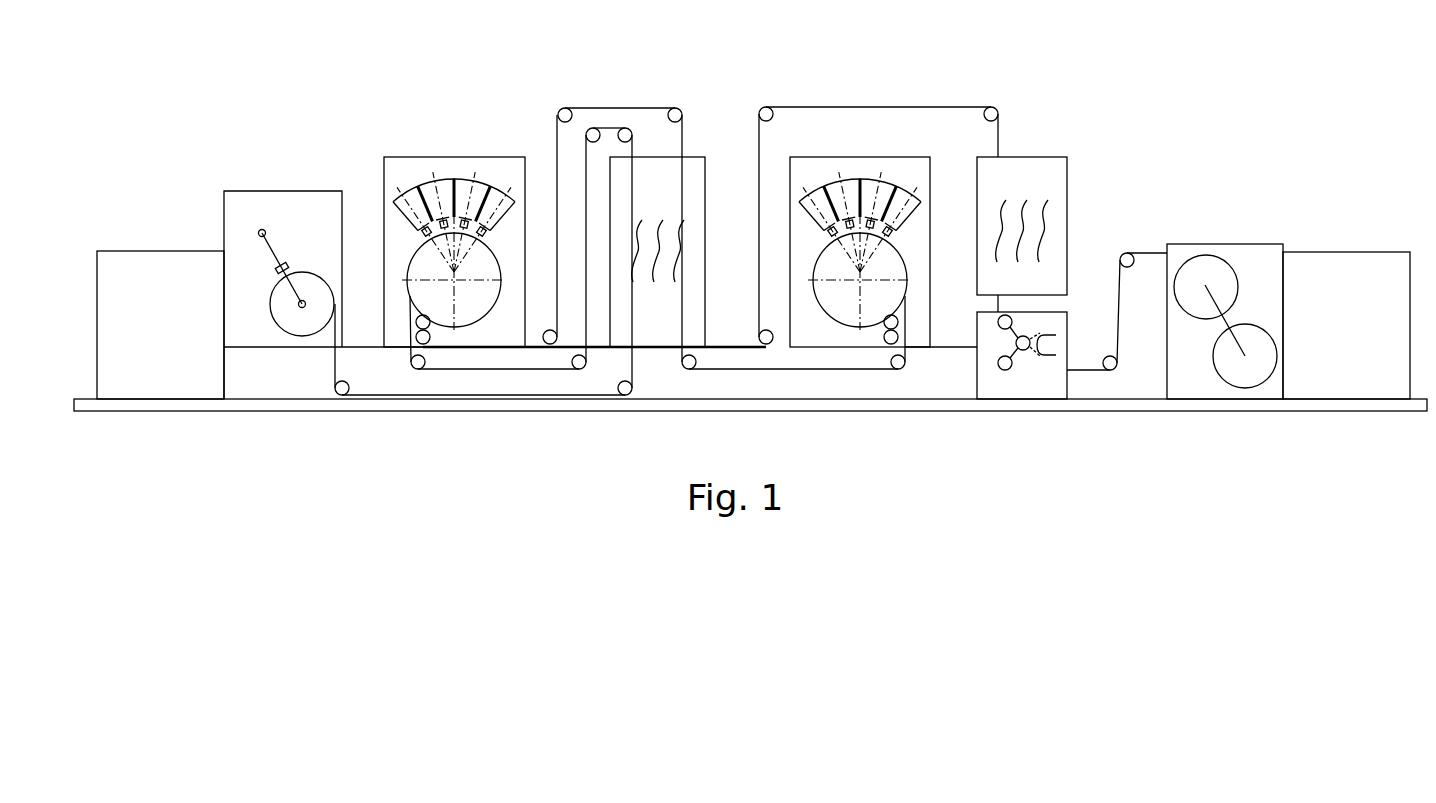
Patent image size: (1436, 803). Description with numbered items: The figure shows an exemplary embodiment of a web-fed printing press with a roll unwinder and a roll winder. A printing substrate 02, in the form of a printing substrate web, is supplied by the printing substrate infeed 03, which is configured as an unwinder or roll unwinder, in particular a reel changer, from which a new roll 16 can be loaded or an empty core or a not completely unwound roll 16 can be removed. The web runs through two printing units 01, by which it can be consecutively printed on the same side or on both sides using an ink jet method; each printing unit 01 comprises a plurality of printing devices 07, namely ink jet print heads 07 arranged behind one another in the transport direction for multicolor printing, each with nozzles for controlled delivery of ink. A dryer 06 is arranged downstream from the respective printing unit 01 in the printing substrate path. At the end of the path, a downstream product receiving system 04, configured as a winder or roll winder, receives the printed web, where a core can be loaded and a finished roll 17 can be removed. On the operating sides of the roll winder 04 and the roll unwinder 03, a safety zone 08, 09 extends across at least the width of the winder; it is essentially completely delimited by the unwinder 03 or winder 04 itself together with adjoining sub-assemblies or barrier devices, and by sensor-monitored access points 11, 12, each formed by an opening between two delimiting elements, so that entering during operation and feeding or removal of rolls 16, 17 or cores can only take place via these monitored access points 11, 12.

The printing unit 01 is at (440, 146).
The printing substrate 02 is at (948, 107).
The printing substrate infeed 03 is at (1246, 253).
The product receiving system 04 is at (306, 200).
The dryer 06 is at (650, 327).
The printing device 07 is at (424, 234).
The safety zone 08 is at (1353, 271).
The safety zone 09 is at (130, 267).
The access point 11 is at (1333, 341).
The access point 12 is at (141, 339).
The roll 16 is at (1190, 282).
The finished roll 17 is at (287, 334).